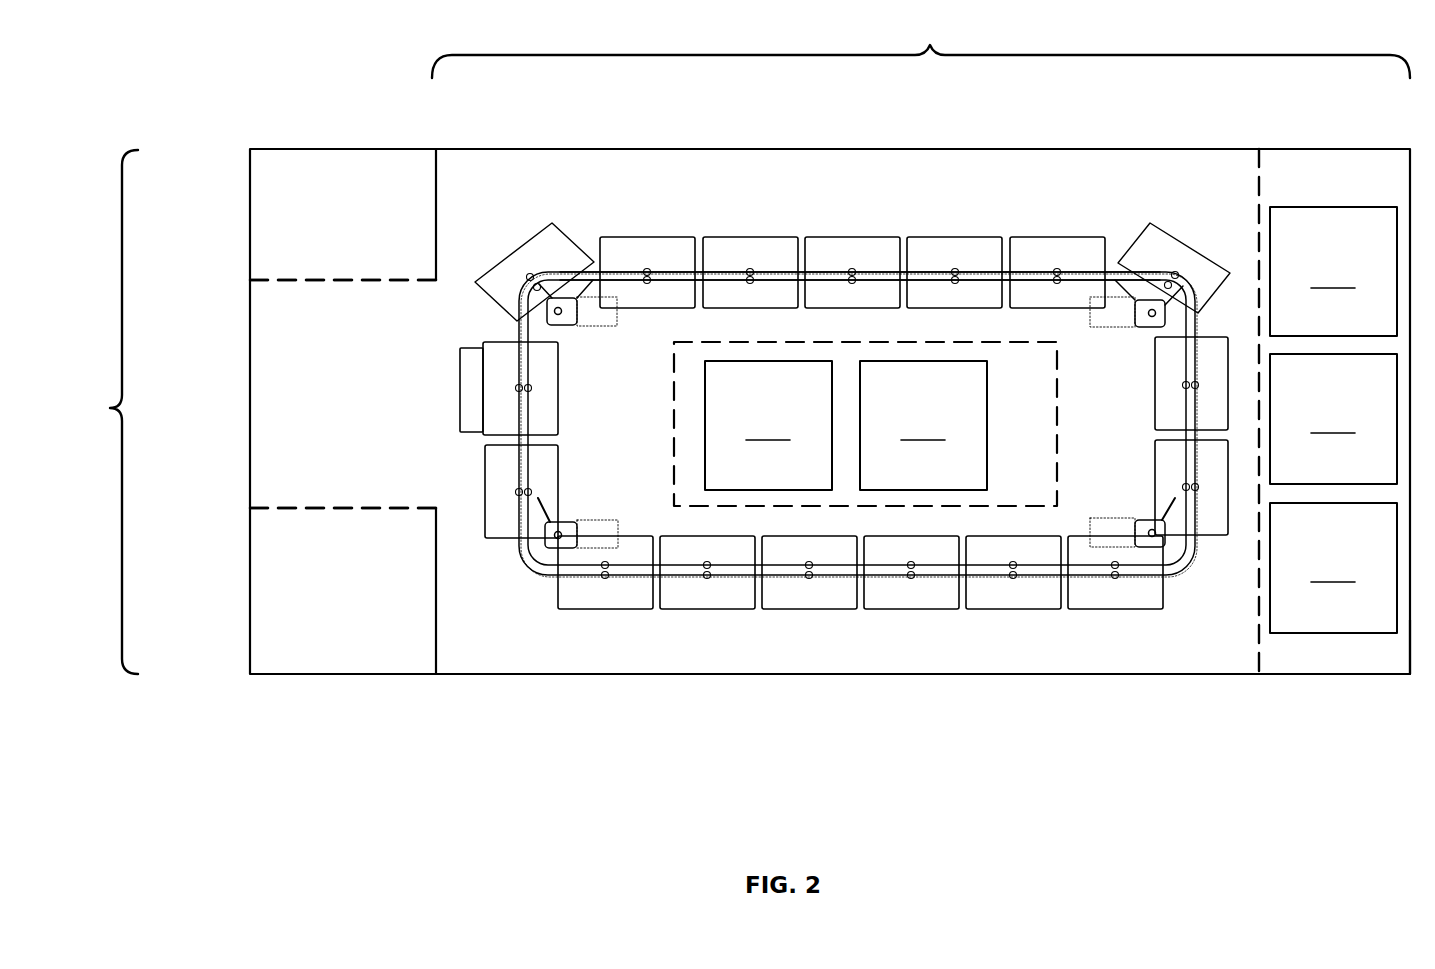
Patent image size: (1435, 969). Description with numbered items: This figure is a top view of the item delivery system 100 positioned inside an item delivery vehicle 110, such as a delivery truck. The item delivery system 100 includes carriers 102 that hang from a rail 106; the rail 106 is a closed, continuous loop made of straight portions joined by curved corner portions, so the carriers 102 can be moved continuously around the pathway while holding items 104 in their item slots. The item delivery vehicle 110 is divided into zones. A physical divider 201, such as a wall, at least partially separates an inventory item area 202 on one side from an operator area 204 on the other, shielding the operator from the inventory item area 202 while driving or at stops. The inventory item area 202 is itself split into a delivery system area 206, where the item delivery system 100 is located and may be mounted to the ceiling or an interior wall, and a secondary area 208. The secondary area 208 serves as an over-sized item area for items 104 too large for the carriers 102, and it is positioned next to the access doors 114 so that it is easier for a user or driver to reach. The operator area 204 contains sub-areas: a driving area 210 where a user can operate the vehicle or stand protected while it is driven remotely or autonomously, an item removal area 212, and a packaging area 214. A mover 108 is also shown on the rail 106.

The item delivery system 100 is at (566, 176).
The carriers 102 is at (543, 403).
The items 104 is at (473, 387).
The rail 106 is at (1112, 276).
The mover 108 is at (1156, 535).
The item delivery vehicle 110 is at (250, 149).
The access doors 114 is at (1408, 658).
The physical divider 201 is at (436, 180).
The inventory item area 202 is at (921, 42).
The operator area 204 is at (94, 412).
The delivery system area 206 is at (885, 180).
The secondary area 208 is at (1320, 175).
The driving area 210 is at (283, 603).
The item removal area 212 is at (283, 392).
The packaging area 214 is at (283, 226).